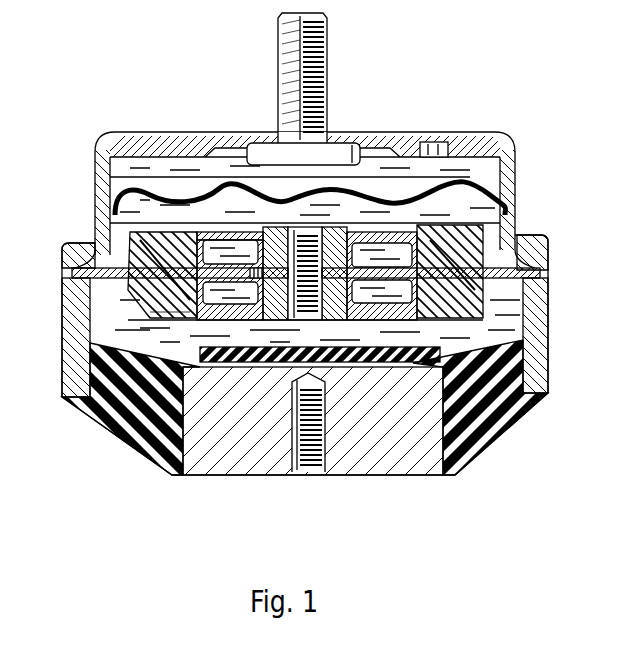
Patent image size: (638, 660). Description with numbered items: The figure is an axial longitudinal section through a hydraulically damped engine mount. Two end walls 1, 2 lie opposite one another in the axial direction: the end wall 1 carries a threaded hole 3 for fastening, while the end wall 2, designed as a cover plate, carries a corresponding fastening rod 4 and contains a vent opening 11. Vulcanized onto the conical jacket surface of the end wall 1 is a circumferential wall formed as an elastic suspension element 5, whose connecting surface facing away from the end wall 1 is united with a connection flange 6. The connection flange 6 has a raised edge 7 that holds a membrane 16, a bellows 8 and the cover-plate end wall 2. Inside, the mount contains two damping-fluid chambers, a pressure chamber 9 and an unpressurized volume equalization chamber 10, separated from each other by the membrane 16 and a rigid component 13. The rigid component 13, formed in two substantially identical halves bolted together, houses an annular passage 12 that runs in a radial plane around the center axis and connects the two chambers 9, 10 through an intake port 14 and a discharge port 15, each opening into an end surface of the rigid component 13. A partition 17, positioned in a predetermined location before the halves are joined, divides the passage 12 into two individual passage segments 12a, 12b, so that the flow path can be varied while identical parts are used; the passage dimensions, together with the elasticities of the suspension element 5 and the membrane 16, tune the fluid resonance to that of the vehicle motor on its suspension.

The end wall 1 is at (377, 427).
The end wall 2 is at (368, 135).
The threaded hole 3 is at (317, 450).
The fastening rod 4 is at (289, 90).
The elastic suspension element 5 is at (500, 400).
The connection flange 6 is at (538, 350).
The raised edge 7 is at (552, 240).
The bellows 8 is at (473, 182).
The pressure chamber 9 is at (530, 318).
The volume equalization chamber 10 is at (135, 188).
The vent opening 11 is at (437, 142).
The annular passage 12 is at (237, 300).
The passage segment 12a is at (217, 290).
The passage segment 12b is at (113, 233).
The rigid component 13 is at (140, 306).
The intake port 14 is at (378, 335).
The discharge port 15 is at (213, 232).
The membrane 16 is at (125, 284).
The partition 17 is at (257, 279).